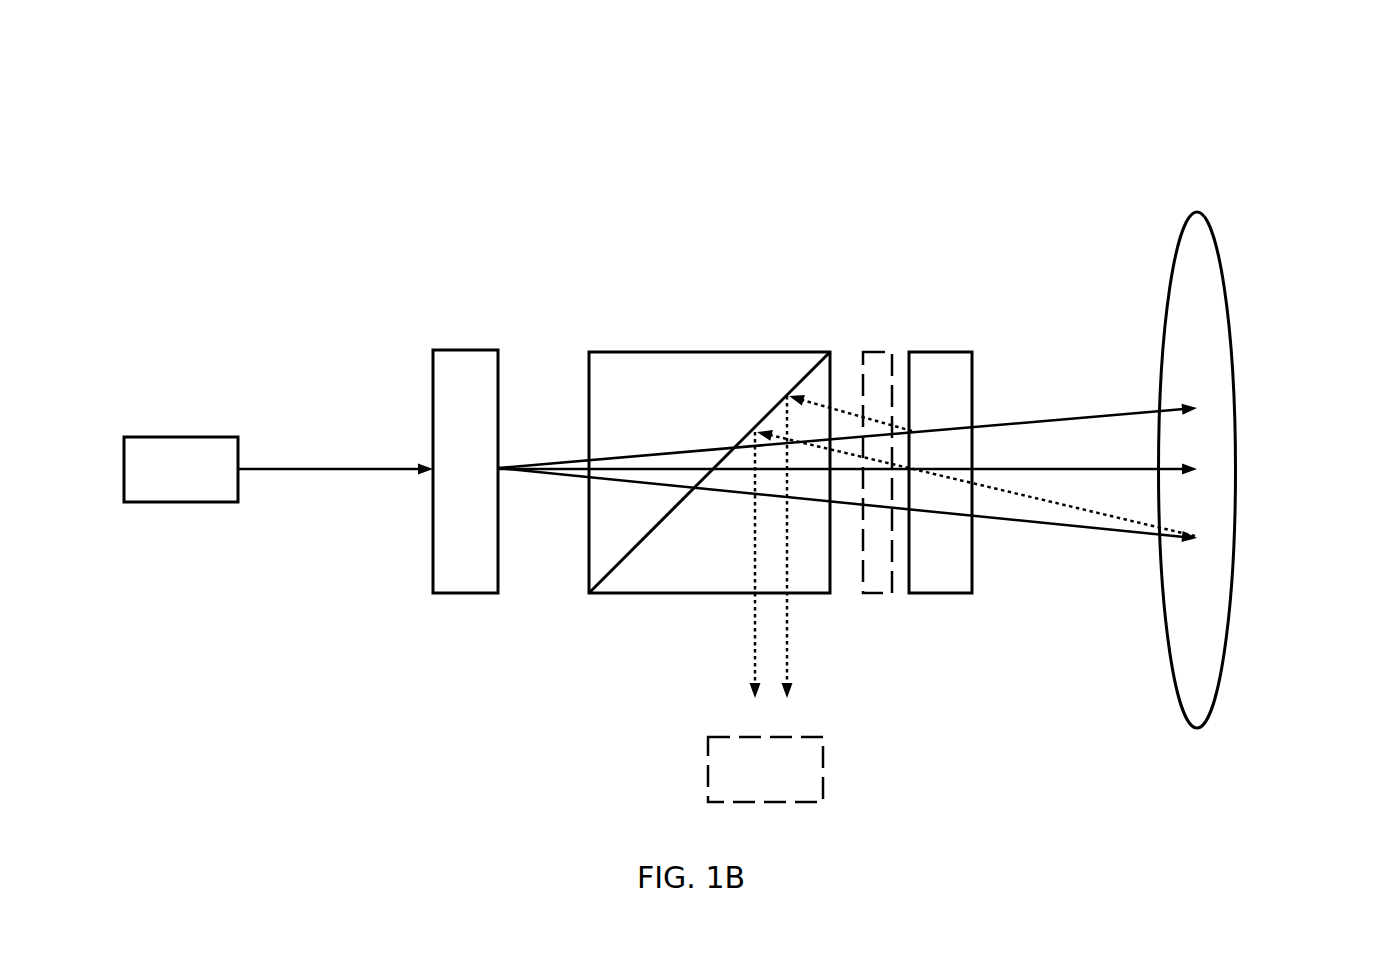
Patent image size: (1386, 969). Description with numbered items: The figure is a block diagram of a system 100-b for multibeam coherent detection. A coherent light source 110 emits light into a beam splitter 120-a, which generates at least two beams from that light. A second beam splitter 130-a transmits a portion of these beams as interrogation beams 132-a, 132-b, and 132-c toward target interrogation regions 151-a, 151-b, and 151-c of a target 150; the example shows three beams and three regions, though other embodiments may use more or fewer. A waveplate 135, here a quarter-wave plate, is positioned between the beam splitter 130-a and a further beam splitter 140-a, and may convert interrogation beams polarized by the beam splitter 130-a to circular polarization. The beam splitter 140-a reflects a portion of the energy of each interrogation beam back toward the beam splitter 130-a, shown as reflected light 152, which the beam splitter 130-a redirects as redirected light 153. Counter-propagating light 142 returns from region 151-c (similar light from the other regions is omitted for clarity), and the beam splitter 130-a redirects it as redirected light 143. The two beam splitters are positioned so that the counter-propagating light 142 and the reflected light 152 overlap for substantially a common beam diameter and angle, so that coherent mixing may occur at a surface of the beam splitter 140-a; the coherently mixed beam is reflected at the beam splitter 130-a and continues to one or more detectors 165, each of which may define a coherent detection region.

The system 100-b is at (1296, 95).
The coherent light source 110 is at (196, 437).
The beam splitter 120-a is at (462, 350).
The beam splitter 130-a is at (706, 352).
The waveplate 135 is at (892, 352).
The beam splitter 140-a is at (948, 352).
The target 150 is at (1166, 288).
The interrogation beam 132-a is at (1092, 416).
The interrogation beam 132-b is at (1112, 469).
The interrogation beam 132-c is at (1066, 526).
The target interrogation region 151-a is at (1208, 396).
The target interrogation region 151-b is at (1208, 458).
The target interrogation region 151-c is at (1210, 527).
The counter-propagating light 142 is at (1122, 510).
The reflected light 152 is at (850, 412).
The redirected light 143 is at (754, 646).
The redirected light 153 is at (786, 620).
The detectors 165 is at (722, 737).